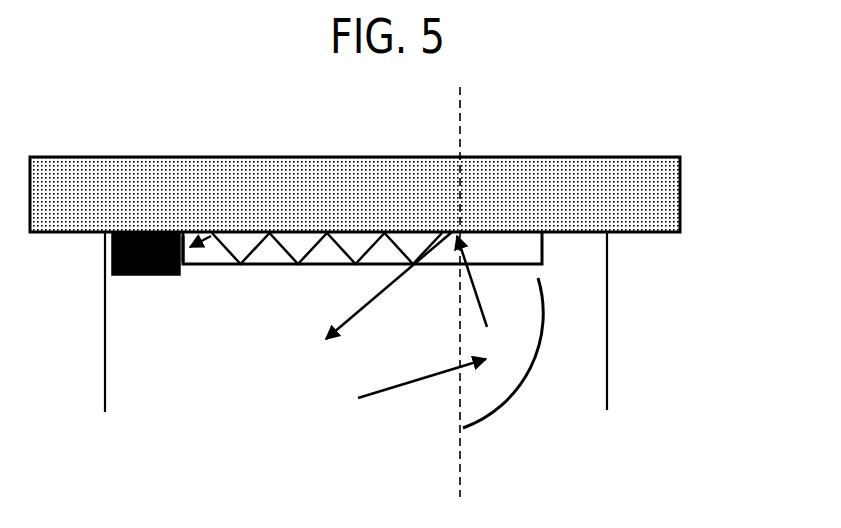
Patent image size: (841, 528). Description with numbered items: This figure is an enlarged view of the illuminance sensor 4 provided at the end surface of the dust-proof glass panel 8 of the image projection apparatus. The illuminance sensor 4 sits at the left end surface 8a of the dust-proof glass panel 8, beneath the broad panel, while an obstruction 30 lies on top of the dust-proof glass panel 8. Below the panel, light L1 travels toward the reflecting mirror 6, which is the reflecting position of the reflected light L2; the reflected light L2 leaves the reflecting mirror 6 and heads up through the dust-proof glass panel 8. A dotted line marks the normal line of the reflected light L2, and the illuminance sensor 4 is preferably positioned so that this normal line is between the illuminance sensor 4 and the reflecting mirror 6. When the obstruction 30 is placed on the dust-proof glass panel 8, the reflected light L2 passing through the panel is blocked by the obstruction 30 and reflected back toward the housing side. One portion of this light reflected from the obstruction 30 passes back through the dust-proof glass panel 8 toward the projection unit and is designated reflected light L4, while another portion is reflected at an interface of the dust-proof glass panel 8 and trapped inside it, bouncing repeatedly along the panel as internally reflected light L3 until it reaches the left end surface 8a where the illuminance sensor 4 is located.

The obstruction 30 is at (680, 192).
The dust-proof glass panel 8 is at (541, 253).
The left end surface 8a is at (180, 254).
The illuminance sensor 4 is at (123, 255).
The reflecting mirror 6 is at (526, 372).
The light L1 is at (393, 392).
The reflected light L2 is at (473, 280).
The internally reflected light L3 is at (258, 247).
The reflected light L4 is at (402, 282).